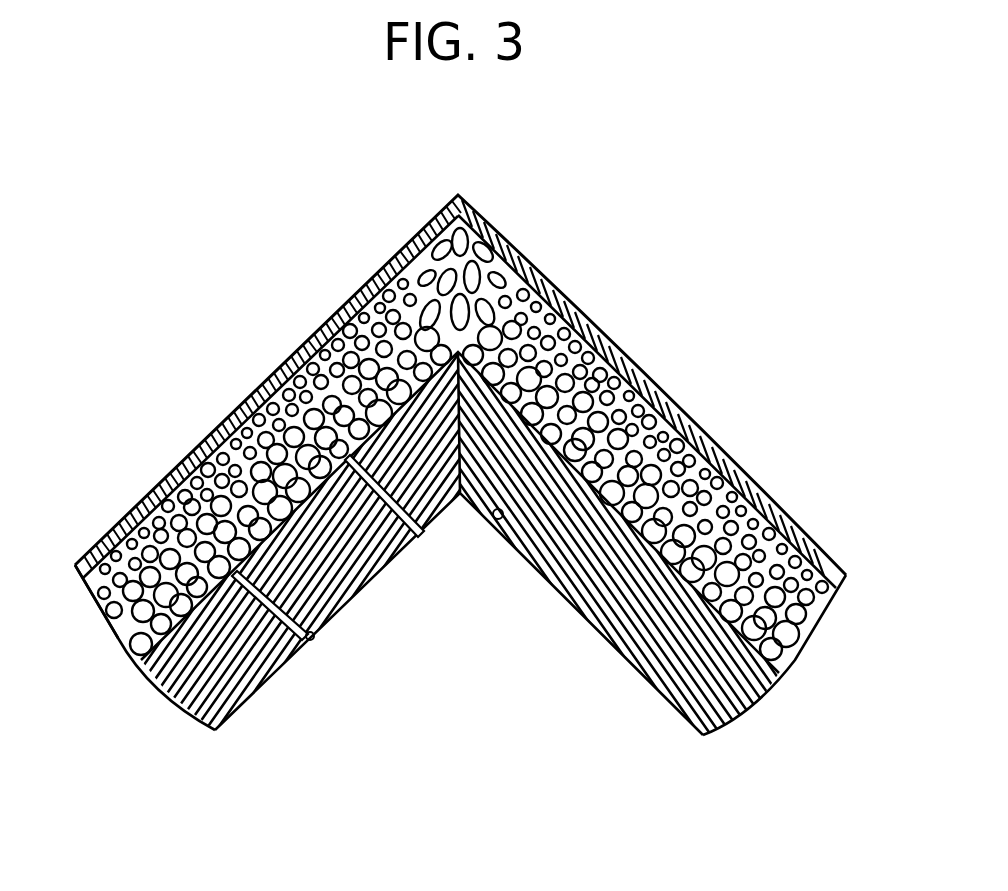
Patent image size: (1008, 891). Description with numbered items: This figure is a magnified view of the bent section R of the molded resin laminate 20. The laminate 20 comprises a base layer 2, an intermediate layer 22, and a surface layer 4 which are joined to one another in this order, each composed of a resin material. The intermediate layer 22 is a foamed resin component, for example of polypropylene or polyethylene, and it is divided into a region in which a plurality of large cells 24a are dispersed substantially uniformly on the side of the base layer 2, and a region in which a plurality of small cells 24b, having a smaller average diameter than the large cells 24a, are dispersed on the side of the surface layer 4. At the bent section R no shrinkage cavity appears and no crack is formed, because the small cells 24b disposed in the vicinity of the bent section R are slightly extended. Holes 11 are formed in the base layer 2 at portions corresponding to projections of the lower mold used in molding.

The molded resin laminate 20 is at (212, 196).
The surface layer 4 is at (216, 450).
The large cells 24a is at (138, 625).
The small cells 24b is at (367, 303).
The intermediate layer 22 is at (100, 590).
The bent section R is at (458, 190).
The base layer 2 is at (375, 563).
The holes 11 is at (313, 640).